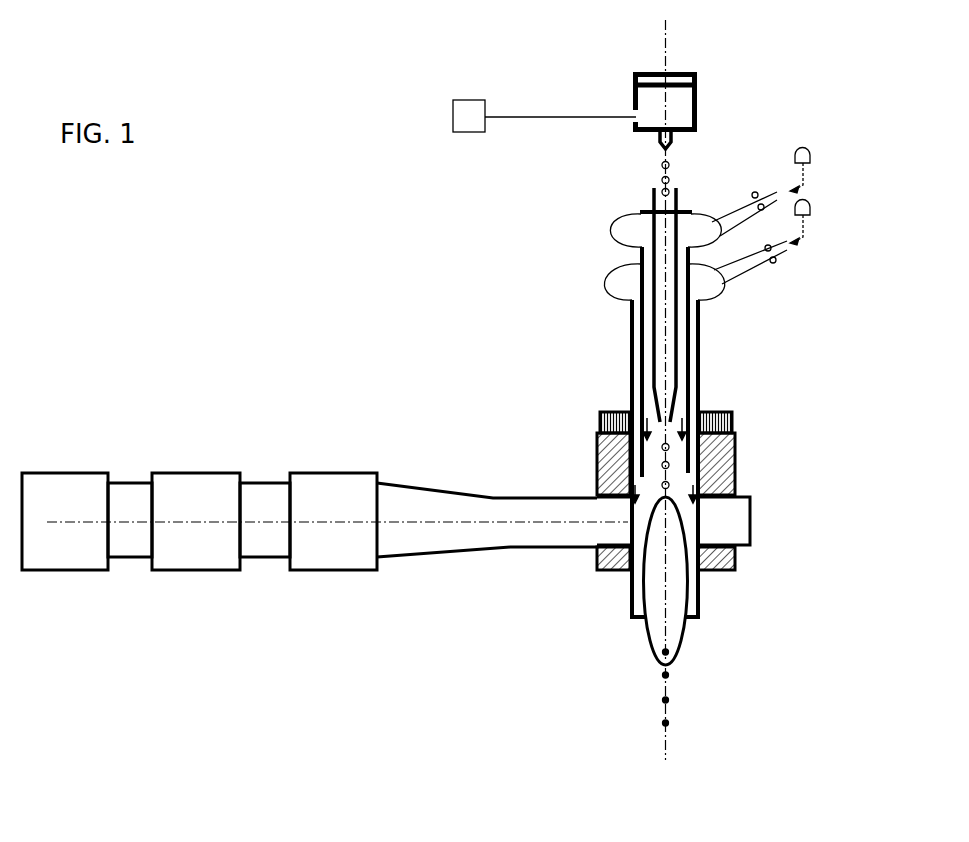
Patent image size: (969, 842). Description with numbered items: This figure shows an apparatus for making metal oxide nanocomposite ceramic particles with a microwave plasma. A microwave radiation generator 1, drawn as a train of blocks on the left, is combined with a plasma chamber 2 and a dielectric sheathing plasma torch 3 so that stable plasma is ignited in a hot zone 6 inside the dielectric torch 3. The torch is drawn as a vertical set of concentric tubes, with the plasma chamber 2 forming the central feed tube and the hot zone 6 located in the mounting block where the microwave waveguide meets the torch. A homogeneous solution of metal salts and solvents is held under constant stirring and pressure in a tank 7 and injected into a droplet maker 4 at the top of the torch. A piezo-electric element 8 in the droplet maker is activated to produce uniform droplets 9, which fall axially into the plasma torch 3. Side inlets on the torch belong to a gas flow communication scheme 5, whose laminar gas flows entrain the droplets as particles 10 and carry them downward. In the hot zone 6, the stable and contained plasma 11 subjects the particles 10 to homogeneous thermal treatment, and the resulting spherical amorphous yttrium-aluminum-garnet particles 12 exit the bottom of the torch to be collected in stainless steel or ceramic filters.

The microwave radiation generator 1 is at (137, 440).
The plasma chamber 2 is at (657, 408).
The dielectric sheathing plasma torch 3 is at (587, 277).
The droplet maker 4 is at (738, 87).
The gas flow communication scheme 5 is at (817, 195).
The hot zone 6 is at (690, 533).
The tank 7 is at (453, 113).
The piezo-electric element 8 is at (628, 72).
The uniform droplets 9 is at (660, 183).
The particles 10 is at (657, 473).
The stable and contained plasma 11 is at (680, 637).
The amorphous yttrium-aluminum-garnet particles 12 is at (667, 702).